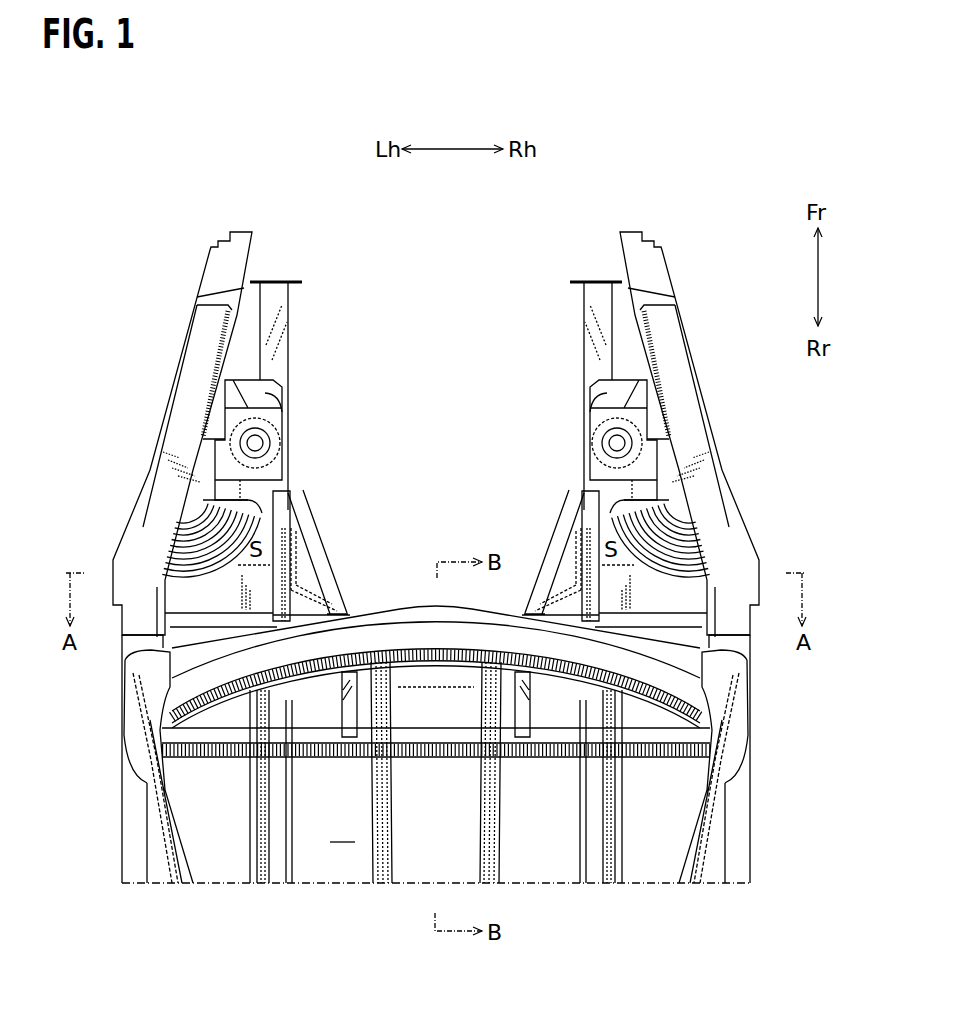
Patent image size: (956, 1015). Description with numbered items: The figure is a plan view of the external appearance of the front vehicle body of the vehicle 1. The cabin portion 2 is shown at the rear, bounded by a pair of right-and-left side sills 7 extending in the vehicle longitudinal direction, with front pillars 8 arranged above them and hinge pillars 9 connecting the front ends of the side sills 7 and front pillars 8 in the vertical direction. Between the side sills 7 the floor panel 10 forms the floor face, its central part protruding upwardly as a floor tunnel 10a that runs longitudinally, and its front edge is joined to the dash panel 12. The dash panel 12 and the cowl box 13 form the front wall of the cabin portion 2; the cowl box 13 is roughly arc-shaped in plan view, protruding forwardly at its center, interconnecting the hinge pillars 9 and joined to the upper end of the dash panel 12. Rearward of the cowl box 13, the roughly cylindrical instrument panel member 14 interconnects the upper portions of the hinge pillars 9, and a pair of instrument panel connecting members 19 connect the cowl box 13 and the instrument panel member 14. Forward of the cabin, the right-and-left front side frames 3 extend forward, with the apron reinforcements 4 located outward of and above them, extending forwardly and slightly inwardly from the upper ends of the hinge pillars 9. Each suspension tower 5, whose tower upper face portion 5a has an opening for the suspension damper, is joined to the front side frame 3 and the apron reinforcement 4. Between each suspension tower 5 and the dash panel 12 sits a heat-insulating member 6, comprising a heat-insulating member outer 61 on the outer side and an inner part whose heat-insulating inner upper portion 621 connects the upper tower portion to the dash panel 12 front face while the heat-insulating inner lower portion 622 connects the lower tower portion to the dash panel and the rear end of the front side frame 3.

The vehicle 1 is at (80, 196).
The cabin portion 2 is at (342, 830).
The front side frames 3 is at (293, 310).
The apron reinforcements 4 is at (190, 320).
The suspension towers 5 is at (285, 422).
The tower upper face portion 5a is at (285, 402).
The heat-insulating members 6 is at (304, 513).
The heat-insulating member outer 61 is at (268, 535).
The heat-insulating inner upper portion 621 is at (315, 558).
The heat-insulating inner lower portion 622 is at (300, 607).
The side sills 7 is at (120, 812).
The front pillars 8 is at (158, 836).
The hinge pillars 9 is at (120, 673).
The floor panel 10 is at (540, 864).
The floor tunnel 10a is at (410, 855).
The dash panel 12 is at (197, 612).
The cowl box 13 is at (423, 603).
The instrument panel member 14 is at (453, 759).
The instrument panel connecting members 19 is at (343, 720).